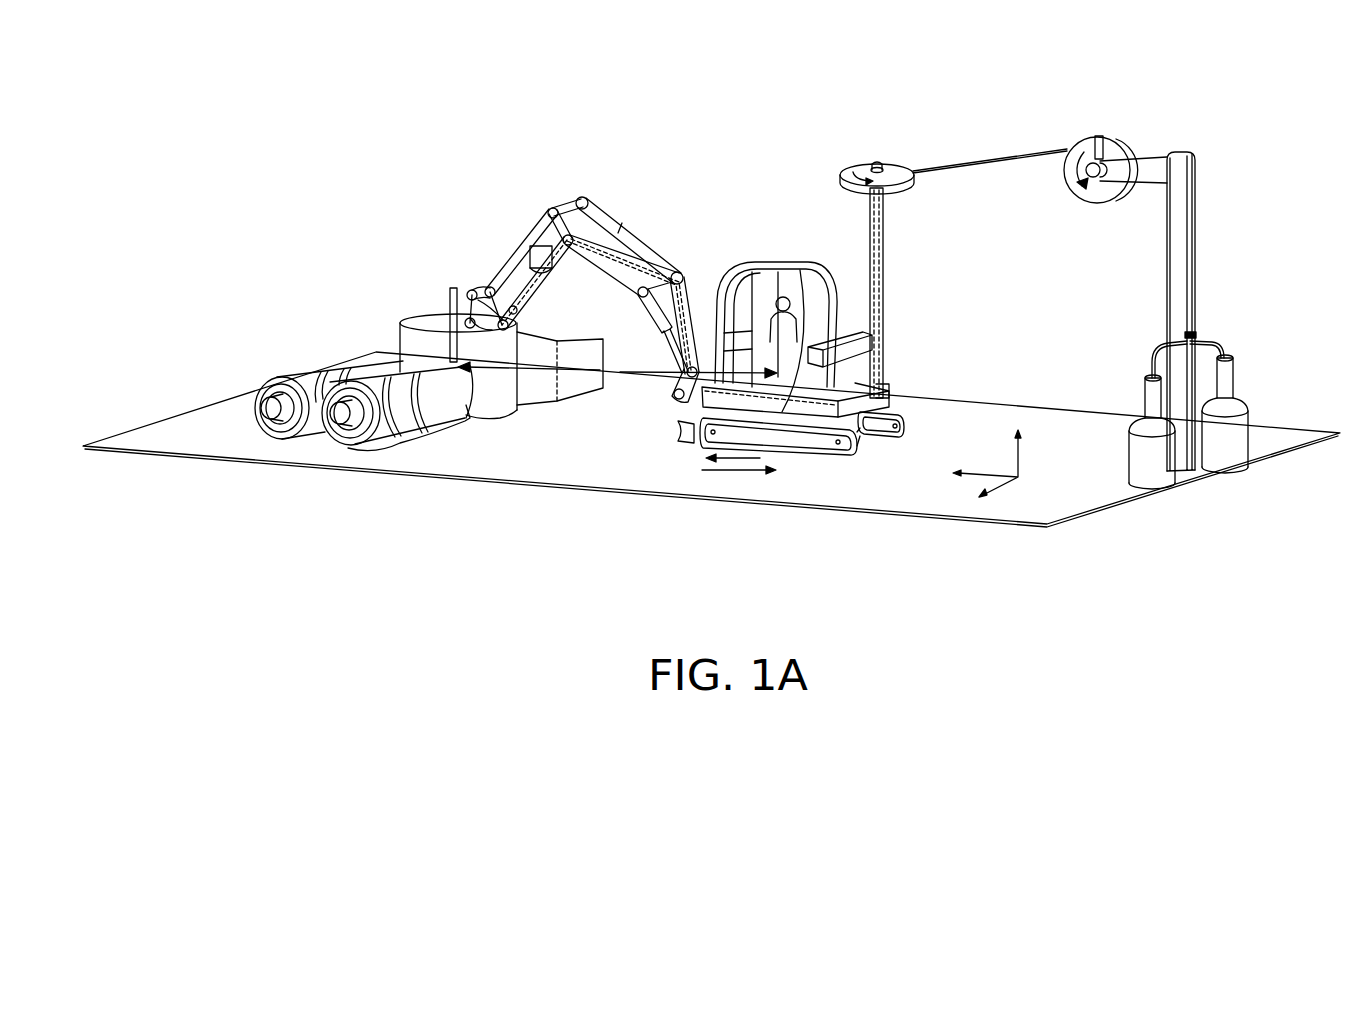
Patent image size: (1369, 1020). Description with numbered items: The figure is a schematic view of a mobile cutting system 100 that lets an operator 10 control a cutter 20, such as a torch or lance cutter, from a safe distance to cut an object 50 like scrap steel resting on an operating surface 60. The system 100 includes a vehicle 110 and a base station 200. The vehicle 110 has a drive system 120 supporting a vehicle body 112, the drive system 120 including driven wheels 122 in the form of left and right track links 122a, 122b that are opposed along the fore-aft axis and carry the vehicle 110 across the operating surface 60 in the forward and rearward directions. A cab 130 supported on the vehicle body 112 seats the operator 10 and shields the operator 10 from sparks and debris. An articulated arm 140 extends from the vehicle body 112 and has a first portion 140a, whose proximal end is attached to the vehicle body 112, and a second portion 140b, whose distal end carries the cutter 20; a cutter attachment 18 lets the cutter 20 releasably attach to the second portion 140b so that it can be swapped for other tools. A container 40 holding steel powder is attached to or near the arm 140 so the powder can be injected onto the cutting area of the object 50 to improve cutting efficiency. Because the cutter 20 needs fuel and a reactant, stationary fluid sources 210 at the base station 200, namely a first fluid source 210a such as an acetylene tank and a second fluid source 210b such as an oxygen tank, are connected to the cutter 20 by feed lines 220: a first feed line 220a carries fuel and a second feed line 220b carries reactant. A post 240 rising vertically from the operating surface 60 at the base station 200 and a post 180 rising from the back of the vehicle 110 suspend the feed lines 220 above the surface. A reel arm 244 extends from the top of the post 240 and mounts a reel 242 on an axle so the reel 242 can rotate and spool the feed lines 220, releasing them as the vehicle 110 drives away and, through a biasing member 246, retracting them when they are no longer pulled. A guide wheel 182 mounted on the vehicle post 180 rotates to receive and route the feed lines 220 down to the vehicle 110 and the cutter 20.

The mobile cutting system 100 is at (820, 82).
The vehicle 110 is at (762, 214).
The operator 10 is at (800, 280).
The cutter attachment 18 is at (517, 333).
The cutter 20 is at (456, 345).
The container 40 is at (525, 253).
The object 50 is at (364, 414).
The operating surface 60 is at (200, 409).
The vehicle body 112 is at (907, 330).
The drive system 120 is at (816, 456).
The driven wheels 122 is at (858, 437).
The left track link 122a is at (800, 456).
The right track link 122b is at (866, 444).
The cab 130 is at (770, 250).
The articulated arm 140 is at (582, 286).
The first portion 140a is at (656, 302).
The second portion 140b is at (534, 298).
The vehicle post 180 is at (869, 234).
The guide wheel 182 is at (842, 180).
The base station 200 is at (1201, 121).
The stationary fluid sources 210 is at (1194, 422).
The first fluid source 210a is at (1128, 462).
The second fluid source 210b is at (1248, 406).
The feed lines 220 is at (942, 272).
The first feed line 220a is at (1152, 370).
The second feed line 220b is at (1214, 346).
The post 240 is at (1167, 242).
The reel 242 is at (1078, 196).
The reel arm 244 is at (1144, 158).
The biasing member 246 is at (1098, 134).